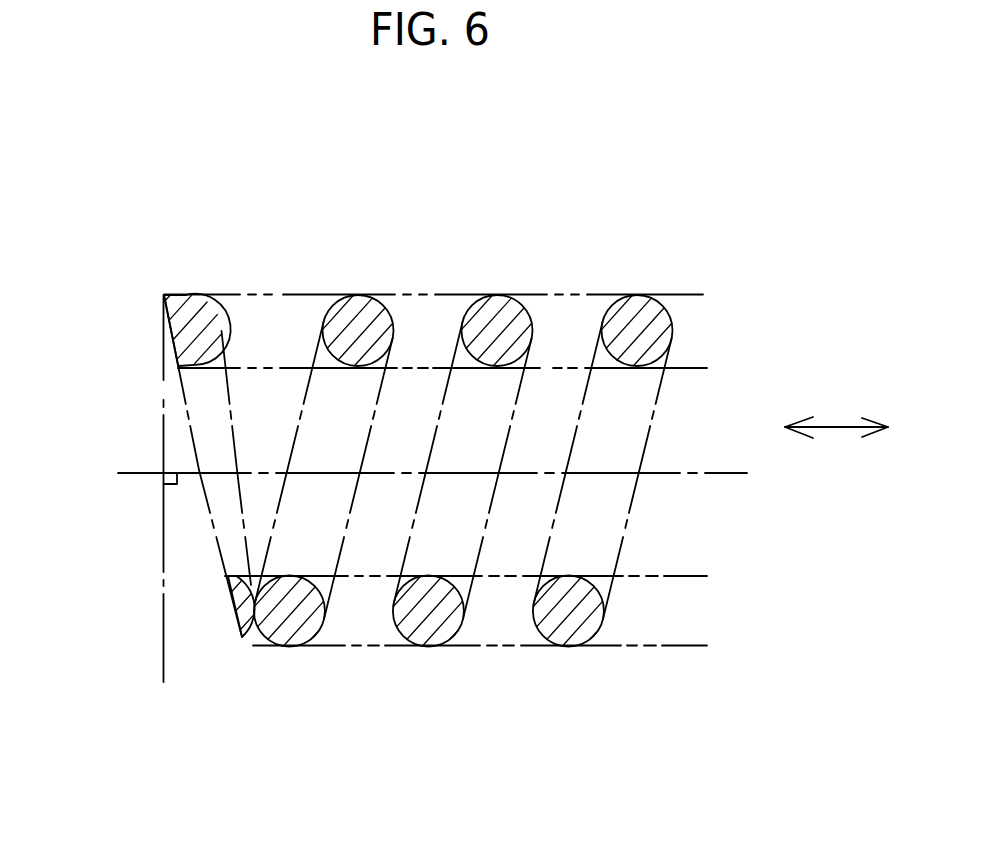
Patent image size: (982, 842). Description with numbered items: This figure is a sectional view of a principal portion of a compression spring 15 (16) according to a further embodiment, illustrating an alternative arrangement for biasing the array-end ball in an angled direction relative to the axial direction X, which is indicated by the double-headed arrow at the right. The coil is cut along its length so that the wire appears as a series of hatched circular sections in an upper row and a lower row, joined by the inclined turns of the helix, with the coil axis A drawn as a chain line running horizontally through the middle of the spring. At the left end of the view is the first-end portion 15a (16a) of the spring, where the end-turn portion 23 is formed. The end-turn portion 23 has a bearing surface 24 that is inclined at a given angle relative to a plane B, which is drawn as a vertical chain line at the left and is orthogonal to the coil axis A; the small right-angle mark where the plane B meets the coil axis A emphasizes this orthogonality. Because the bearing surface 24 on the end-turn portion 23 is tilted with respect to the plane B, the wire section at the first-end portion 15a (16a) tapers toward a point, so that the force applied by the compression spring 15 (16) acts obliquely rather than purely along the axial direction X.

The compression spring 15 is at (496, 266).
The compression spring 16 is at (435, 398).
The first-end portion 15a is at (322, 638).
The first-end portion 16a is at (466, 662).
The end-turn portion 23 is at (226, 297).
The bearing surface 24 is at (231, 615).
The coil axis A is at (718, 477).
The plane B is at (163, 645).
The axial direction X is at (833, 427).